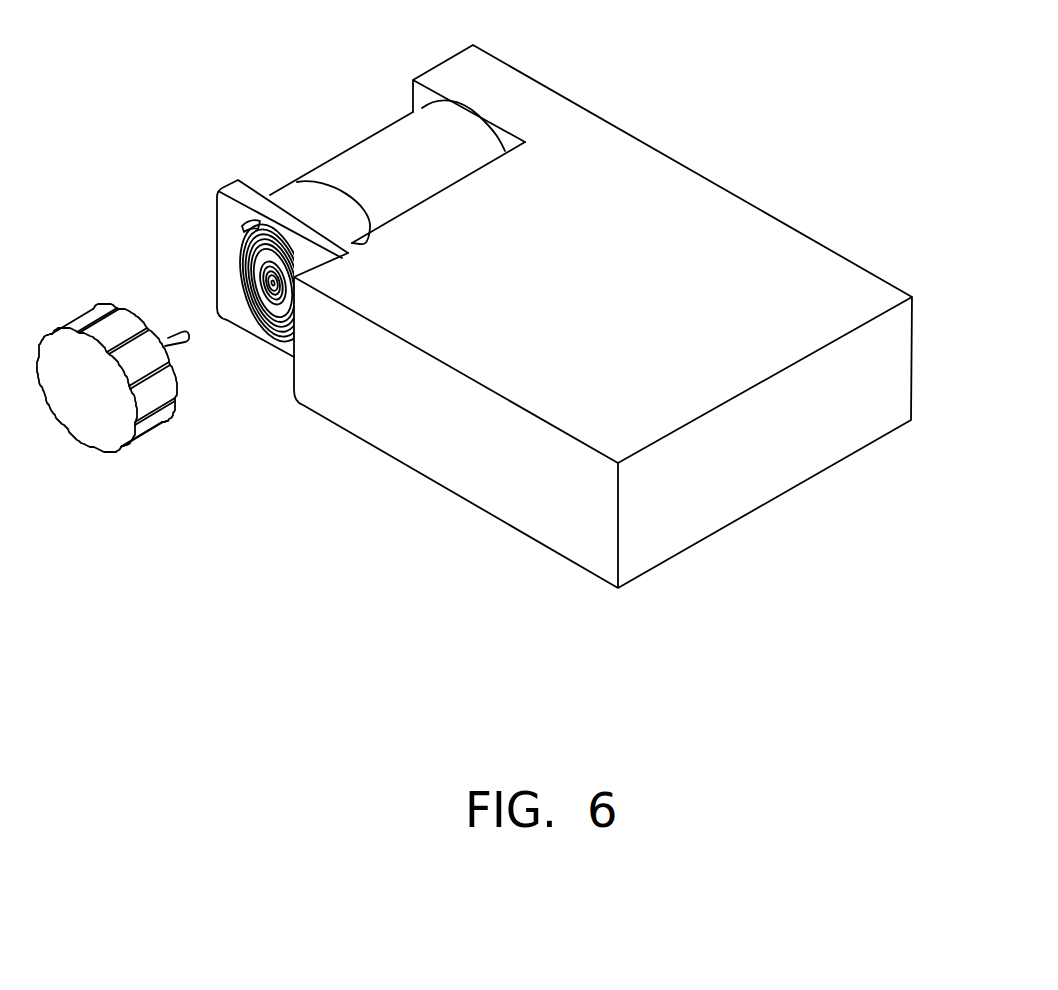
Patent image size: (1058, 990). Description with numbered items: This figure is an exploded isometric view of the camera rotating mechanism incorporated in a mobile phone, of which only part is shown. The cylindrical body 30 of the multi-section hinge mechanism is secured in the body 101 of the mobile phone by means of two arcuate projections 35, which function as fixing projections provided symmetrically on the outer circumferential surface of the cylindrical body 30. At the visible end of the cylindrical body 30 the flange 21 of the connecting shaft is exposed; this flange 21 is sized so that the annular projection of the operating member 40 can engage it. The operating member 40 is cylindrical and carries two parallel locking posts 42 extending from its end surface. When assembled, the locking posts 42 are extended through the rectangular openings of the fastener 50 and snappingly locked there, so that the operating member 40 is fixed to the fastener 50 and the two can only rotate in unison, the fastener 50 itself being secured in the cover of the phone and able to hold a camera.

The body 101 is at (649, 217).
The fastener 50 is at (310, 200).
The arcuate projections 35 is at (246, 263).
The cylindrical body 30 is at (287, 303).
The flange 21 is at (262, 283).
The operating member 40 is at (152, 405).
The locking posts 42 is at (180, 332).